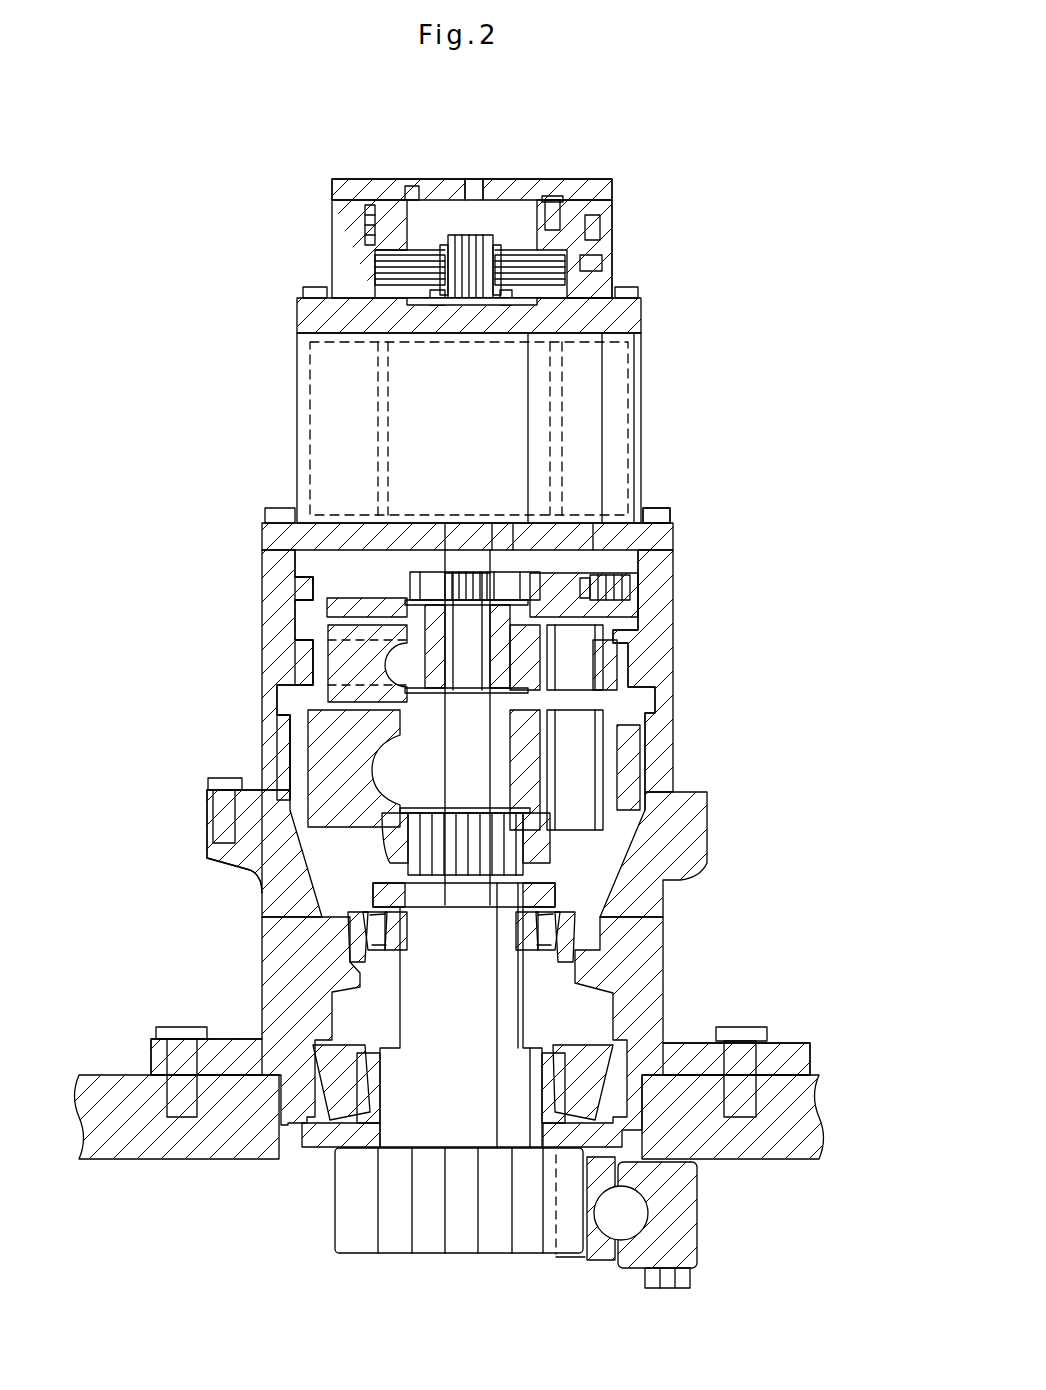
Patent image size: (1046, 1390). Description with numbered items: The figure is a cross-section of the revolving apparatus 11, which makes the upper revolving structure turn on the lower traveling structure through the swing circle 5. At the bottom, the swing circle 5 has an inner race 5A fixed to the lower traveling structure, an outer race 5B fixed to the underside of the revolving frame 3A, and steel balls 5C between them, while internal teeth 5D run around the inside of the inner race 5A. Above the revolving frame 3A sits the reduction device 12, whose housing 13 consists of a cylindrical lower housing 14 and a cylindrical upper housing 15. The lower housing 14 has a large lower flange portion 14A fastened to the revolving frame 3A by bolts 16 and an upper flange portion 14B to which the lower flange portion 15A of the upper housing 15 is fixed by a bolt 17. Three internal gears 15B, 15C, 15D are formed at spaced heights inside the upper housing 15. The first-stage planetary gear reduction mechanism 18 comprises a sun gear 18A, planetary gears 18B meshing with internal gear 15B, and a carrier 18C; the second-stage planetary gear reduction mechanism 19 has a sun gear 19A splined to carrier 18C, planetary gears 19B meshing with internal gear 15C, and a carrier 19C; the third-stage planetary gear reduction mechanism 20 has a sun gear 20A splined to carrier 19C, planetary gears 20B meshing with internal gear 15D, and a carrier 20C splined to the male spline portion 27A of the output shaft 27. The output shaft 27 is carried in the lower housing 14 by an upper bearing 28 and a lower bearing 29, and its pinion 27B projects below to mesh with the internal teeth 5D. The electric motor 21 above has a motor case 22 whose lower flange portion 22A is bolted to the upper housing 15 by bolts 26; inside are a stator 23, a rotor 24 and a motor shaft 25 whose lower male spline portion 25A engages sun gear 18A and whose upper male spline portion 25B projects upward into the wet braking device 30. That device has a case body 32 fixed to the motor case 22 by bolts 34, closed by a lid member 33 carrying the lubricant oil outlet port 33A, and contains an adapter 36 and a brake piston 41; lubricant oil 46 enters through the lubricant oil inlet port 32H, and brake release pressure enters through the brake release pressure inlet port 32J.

The revolving frame 3A is at (139, 1138).
The swing circle 5 is at (703, 1217).
The inner race 5A is at (605, 1249).
The outer race 5B is at (661, 1235).
The steel balls 5C is at (633, 1205).
The internal teeth 5D is at (561, 1256).
The revolving apparatus 11 is at (603, 165).
The reduction device 12 is at (245, 628).
The housing 13 is at (712, 814).
The lower housing 14 is at (623, 988).
The lower flange portion 14A is at (760, 1057).
The upper flange portion 14B is at (213, 850).
The upper housing 15 is at (653, 655).
The lower flange portion 15A is at (215, 810).
The internal gear 15B is at (305, 585).
The internal gear 15C is at (305, 660).
The internal gear 15D is at (283, 730).
The bolts 16 is at (747, 1042).
The bolt 17 is at (208, 783).
The first-stage planetary gear reduction mechanism 18 is at (605, 565).
The sun gear 18A is at (503, 573).
The planetary gears 18B is at (615, 580).
The carrier 18C is at (580, 607).
The second-stage planetary gear reduction mechanism 19 is at (617, 637).
The sun gear 19A is at (367, 620).
The planetary gears 19B is at (605, 672).
The carrier 19C is at (355, 668).
The third-stage planetary gear reduction mechanism 20 is at (627, 820).
The sun gear 20A is at (510, 740).
The planetary gears 20B is at (627, 772).
The carrier 20C is at (340, 770).
The electric motor 21 is at (285, 405).
The motor case 22 is at (297, 352).
The lower flange portion 22A is at (283, 535).
The stator 23 is at (612, 360).
The rotor 24 is at (513, 392).
The motor shaft 25 is at (465, 557).
The lower male spline portion 25A is at (445, 575).
The upper male spline portion 25B is at (457, 233).
The bolts 26 is at (655, 515).
The output shaft 27 is at (440, 978).
The male spline portion 27A is at (473, 835).
The pinion 27B is at (454, 1214).
The upper bearing 28 is at (575, 938).
The lower bearing 29 is at (343, 1083).
The wet braking device 30 is at (305, 247).
The case body 32 is at (352, 273).
The lubricant oil inlet port 32H is at (603, 274).
The brake release pressure inlet port 32J is at (607, 222).
The lid member 33 is at (372, 190).
The lubricant oil outlet port 33A is at (472, 190).
The bolts 34 is at (626, 299).
The adapter 36 is at (500, 262).
The brake piston 41 is at (365, 225).
The lubricant oil 46 is at (414, 186).